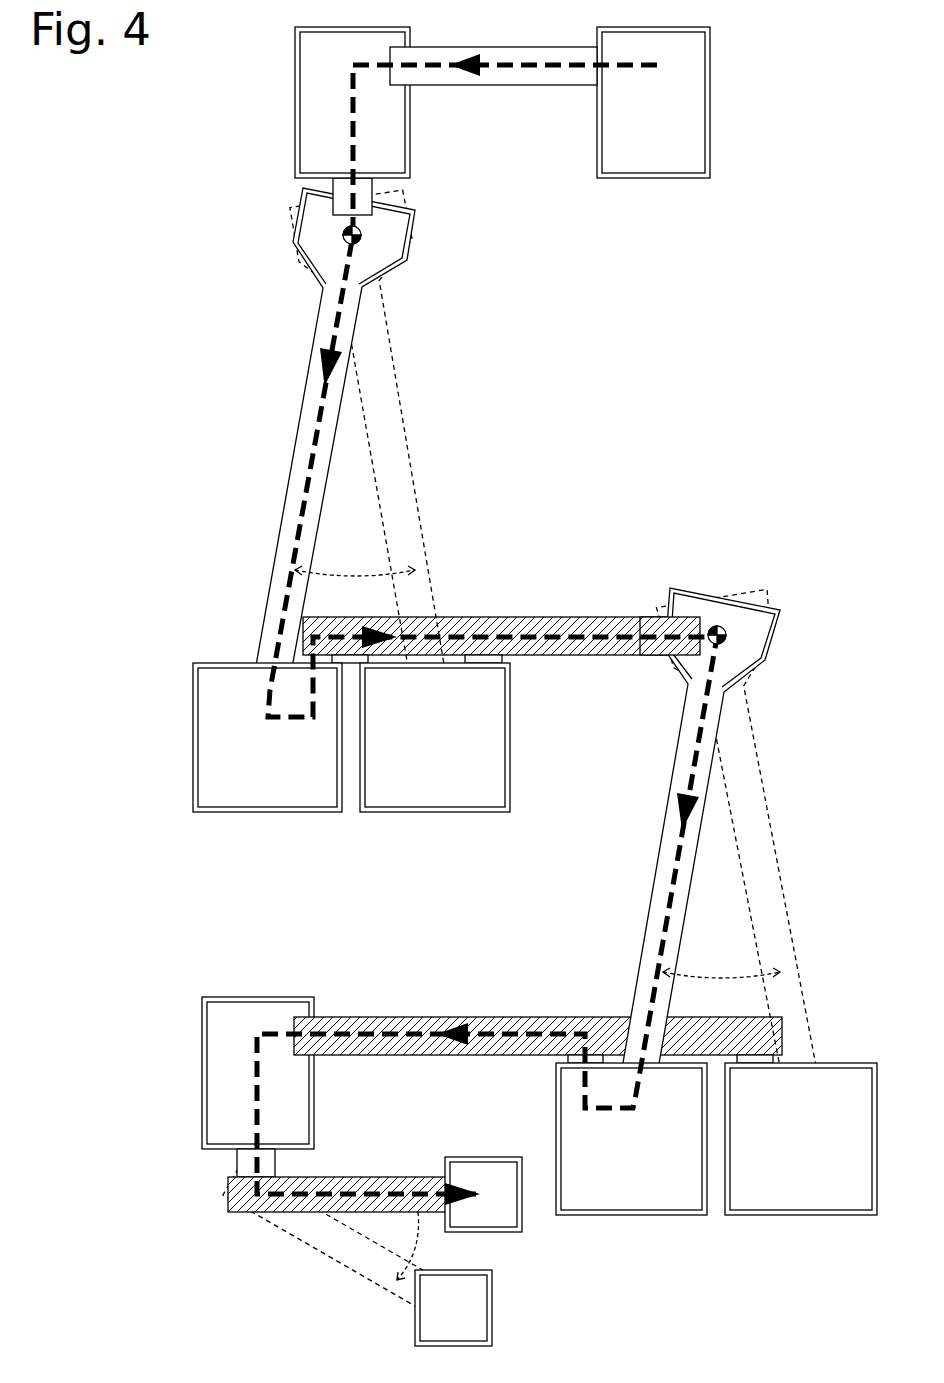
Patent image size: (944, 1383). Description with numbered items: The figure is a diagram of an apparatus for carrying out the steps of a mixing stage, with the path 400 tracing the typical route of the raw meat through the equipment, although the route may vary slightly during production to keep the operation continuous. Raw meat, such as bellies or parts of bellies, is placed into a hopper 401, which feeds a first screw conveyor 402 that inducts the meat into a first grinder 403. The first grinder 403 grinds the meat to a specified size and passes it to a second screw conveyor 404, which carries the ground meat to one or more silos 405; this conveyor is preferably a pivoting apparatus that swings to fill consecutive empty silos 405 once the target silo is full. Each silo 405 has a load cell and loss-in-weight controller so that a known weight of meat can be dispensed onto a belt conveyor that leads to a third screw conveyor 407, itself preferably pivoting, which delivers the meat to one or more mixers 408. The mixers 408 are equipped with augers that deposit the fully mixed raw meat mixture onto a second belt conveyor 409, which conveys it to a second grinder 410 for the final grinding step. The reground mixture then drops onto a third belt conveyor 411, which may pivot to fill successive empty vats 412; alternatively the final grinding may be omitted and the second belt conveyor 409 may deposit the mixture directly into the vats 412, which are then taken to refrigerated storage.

The path 400 is at (347, 142).
The hopper 401 is at (677, 165).
The first screw conveyor 402 is at (507, 82).
The first grinder 403 is at (312, 88).
The second screw conveyor 404 is at (302, 423).
The silo 405 is at (265, 800).
The third screw conveyor 407 is at (665, 888).
The mixer 408 is at (660, 1195).
The second belt conveyor 409 is at (492, 1016).
The second grinder 410 is at (213, 1062).
The third belt conveyor 411 is at (382, 1183).
The vat 412 is at (502, 1217).